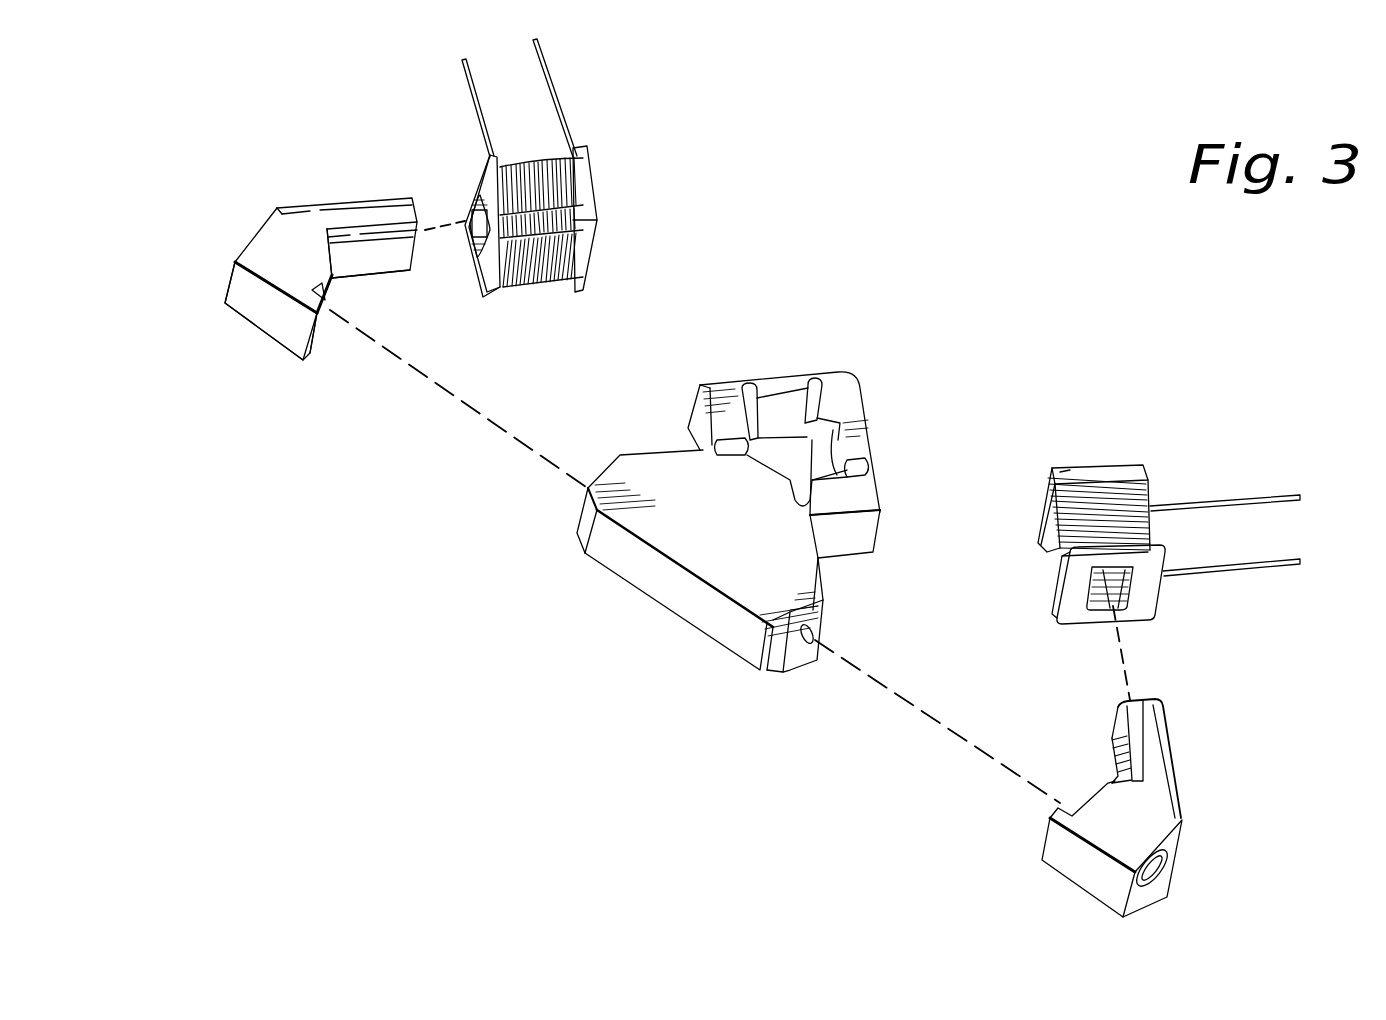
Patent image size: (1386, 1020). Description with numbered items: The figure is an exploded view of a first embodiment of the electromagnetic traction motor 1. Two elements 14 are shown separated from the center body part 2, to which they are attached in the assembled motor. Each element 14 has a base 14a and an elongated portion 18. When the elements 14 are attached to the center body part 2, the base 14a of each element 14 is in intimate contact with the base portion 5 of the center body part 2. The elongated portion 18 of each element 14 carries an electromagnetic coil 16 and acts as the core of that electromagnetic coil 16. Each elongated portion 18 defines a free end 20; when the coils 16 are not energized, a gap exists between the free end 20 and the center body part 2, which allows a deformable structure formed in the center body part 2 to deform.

The electromagnetic traction motor 1 is at (898, 284).
The center body part 2 is at (697, 470).
The base portion 5 is at (707, 565).
The element 14 is at (265, 236).
The base 14a is at (285, 280).
The electromagnetic coil 16 is at (592, 177).
The elongated portion 18 is at (372, 213).
The free end 20 is at (418, 225).